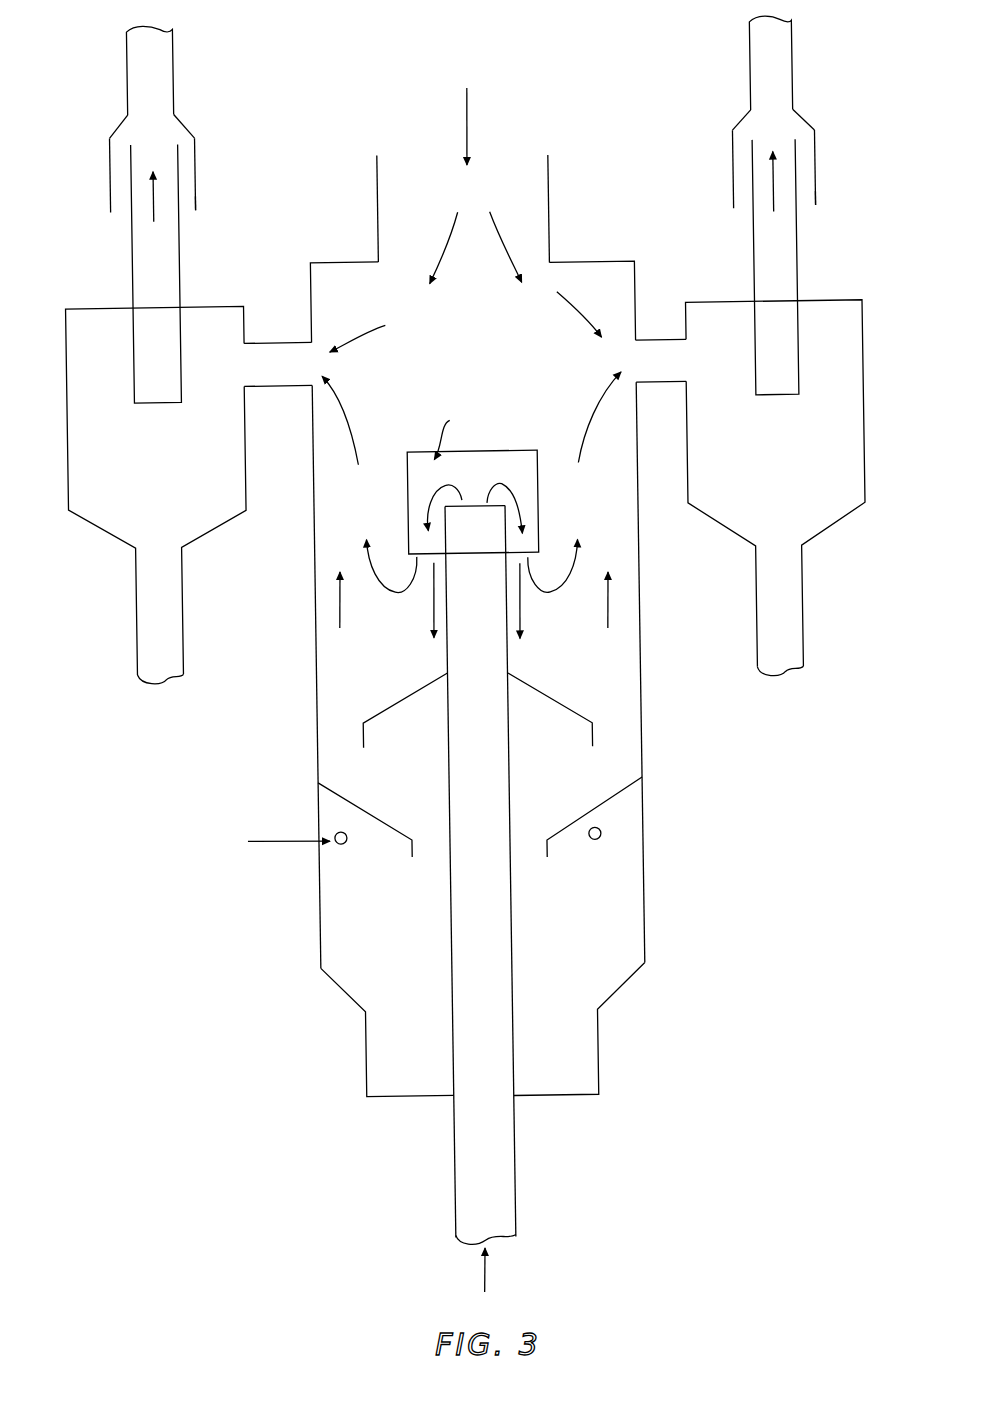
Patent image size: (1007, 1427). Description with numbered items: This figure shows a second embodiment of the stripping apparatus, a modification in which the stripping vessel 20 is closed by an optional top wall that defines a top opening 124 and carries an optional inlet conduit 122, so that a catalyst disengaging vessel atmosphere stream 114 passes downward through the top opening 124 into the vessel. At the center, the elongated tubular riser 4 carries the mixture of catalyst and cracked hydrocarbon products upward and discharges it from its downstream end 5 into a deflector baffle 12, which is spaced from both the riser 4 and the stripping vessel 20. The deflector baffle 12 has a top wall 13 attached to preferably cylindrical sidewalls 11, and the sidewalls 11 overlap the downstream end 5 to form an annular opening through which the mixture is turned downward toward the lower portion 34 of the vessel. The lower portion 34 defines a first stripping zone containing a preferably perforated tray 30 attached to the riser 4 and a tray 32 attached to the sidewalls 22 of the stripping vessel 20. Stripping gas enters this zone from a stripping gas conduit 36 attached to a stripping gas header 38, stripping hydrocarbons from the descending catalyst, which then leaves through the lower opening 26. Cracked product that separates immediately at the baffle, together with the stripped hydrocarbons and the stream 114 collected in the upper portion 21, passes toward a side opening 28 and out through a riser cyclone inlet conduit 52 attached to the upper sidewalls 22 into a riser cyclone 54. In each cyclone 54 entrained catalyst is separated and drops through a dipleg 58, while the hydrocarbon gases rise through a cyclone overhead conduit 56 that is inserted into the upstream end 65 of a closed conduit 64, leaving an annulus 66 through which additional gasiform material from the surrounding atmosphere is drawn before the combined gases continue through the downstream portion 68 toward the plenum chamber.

The riser 4 is at (509, 1173).
The downstream end of riser 5 is at (507, 512).
The sidewalls of deflector baffle 11 is at (410, 467).
The deflector baffle 12 is at (454, 430).
The top wall of deflector baffle 13 is at (523, 451).
The stripping vessel 20 is at (645, 277).
The upper portion of stripping vessel 21 is at (317, 270).
The sidewalls of stripping vessel 22 is at (314, 580).
The lower opening 26 is at (397, 1077).
The side opening 28 is at (644, 360).
The tray 30 is at (570, 704).
The tray 32 is at (611, 799).
The lower portion of stripping vessel 34 is at (315, 746).
The stripping gas conduit 36 is at (280, 837).
The stripping gas header 38 is at (599, 837).
The riser cyclone inlet conduit 52 is at (682, 295).
The riser cyclone 54 is at (690, 476).
The cyclone overhead conduit 56 is at (830, 280).
The dipleg 58 is at (757, 614).
The closed conduit 64 is at (848, 123).
The upstream end of closed conduit 65 is at (847, 170).
The annulus 66 is at (832, 227).
The downstream portion of closed conduit 68 is at (836, 53).
The catalyst disengaging vessel atmosphere stream 114 is at (478, 107).
The inlet conduit 122 is at (385, 177).
The top opening 124 is at (528, 237).